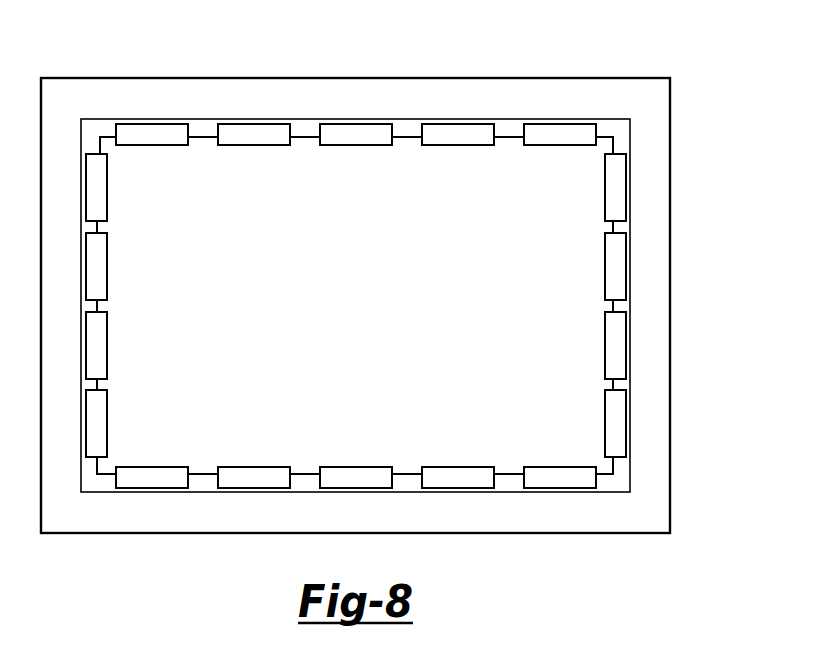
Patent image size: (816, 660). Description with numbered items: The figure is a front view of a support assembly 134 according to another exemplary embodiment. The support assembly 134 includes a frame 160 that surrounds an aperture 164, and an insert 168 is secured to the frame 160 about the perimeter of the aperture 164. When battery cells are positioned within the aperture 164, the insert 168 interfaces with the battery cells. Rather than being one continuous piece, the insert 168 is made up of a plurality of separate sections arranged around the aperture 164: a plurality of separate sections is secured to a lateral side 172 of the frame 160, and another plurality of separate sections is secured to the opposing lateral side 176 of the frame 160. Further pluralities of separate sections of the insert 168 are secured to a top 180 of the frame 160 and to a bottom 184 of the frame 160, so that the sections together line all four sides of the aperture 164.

The support assembly 134 is at (643, 50).
The frame 160 is at (166, 98).
The aperture 164 is at (266, 438).
The insert 168 is at (257, 133).
The lateral side 172 is at (120, 345).
The opposing lateral side 176 is at (588, 300).
The top 180 is at (410, 160).
The bottom 184 is at (352, 460).